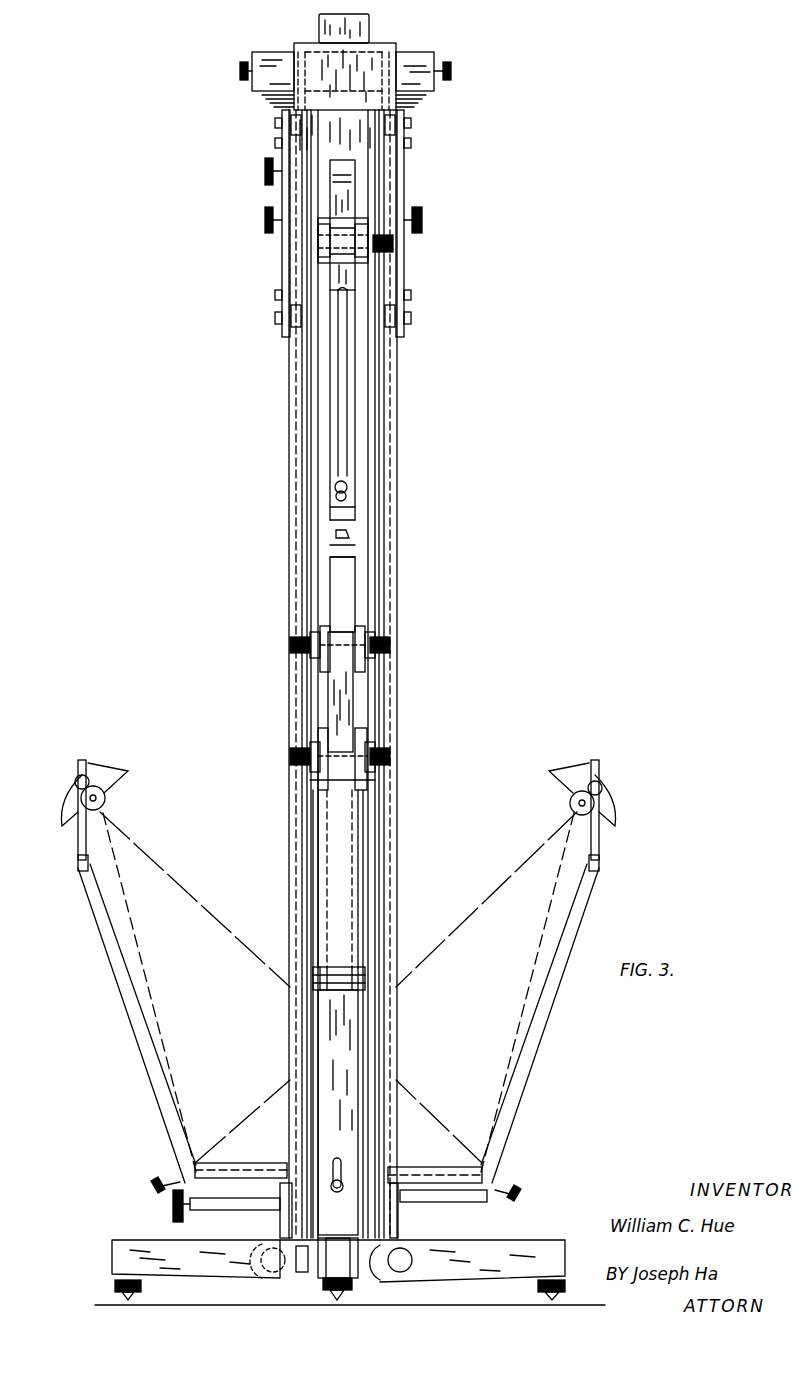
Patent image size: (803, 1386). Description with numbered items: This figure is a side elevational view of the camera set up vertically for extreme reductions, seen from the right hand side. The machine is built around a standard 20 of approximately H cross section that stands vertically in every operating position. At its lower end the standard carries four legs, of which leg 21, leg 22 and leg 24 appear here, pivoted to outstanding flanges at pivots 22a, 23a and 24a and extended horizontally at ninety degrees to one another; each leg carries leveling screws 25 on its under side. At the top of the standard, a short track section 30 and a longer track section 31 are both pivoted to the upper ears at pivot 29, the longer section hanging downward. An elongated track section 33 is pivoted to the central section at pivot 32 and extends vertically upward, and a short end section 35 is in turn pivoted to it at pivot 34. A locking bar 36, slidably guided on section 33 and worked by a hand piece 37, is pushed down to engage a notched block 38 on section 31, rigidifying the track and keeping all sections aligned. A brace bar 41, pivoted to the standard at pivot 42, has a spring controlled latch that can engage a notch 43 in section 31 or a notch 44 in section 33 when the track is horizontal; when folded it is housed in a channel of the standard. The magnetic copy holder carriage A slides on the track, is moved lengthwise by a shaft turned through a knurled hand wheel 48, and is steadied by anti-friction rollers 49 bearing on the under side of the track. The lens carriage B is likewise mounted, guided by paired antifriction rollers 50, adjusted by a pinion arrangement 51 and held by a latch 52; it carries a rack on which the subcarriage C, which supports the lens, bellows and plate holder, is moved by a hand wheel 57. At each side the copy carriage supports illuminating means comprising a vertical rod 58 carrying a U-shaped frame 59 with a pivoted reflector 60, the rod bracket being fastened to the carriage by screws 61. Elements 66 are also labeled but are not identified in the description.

The standard 20 is at (370, 948).
The leg 21 is at (352, 1268).
The leg 22 is at (560, 1248).
The pivot 22a is at (252, 1268).
The pivot 23a is at (319, 1269).
The leg 24 is at (120, 1250).
The pivot 24a is at (412, 1276).
The leveling screws 25 is at (115, 1286).
The pivotal connection 29 is at (380, 748).
The short track section 30 is at (342, 702).
The longer track section 31 is at (356, 924).
The pivotal connection 32 is at (372, 636).
The track section 33 is at (355, 602).
The pivotal connection 34 is at (336, 252).
The short end section 35 is at (342, 215).
The locking bar 36 is at (340, 448).
The hand piece 37 is at (347, 487).
The notched block 38 is at (358, 845).
The brace bar 41 is at (340, 1030).
The pivot 42 is at (313, 972).
The notch 43 is at (358, 864).
The notch 44 is at (350, 535).
The knurled hand wheel 48 is at (172, 1210).
The anti-friction rollers 49 is at (286, 1166).
The guiding antifriction rollers 50 is at (398, 127).
The pinion arrangement 51 is at (265, 220).
The latch 52 is at (265, 166).
The hand wheel 57 is at (256, 84).
The rod 58 is at (560, 1022).
The U-shaped frame 59 is at (600, 858).
The reflector 60 is at (604, 793).
The screws 61 is at (178, 1180).
The guide 66 is at (305, 540).
The copy holder carriage A is at (396, 1236).
The lens carriage B is at (402, 262).
The subcarriage C is at (432, 90).